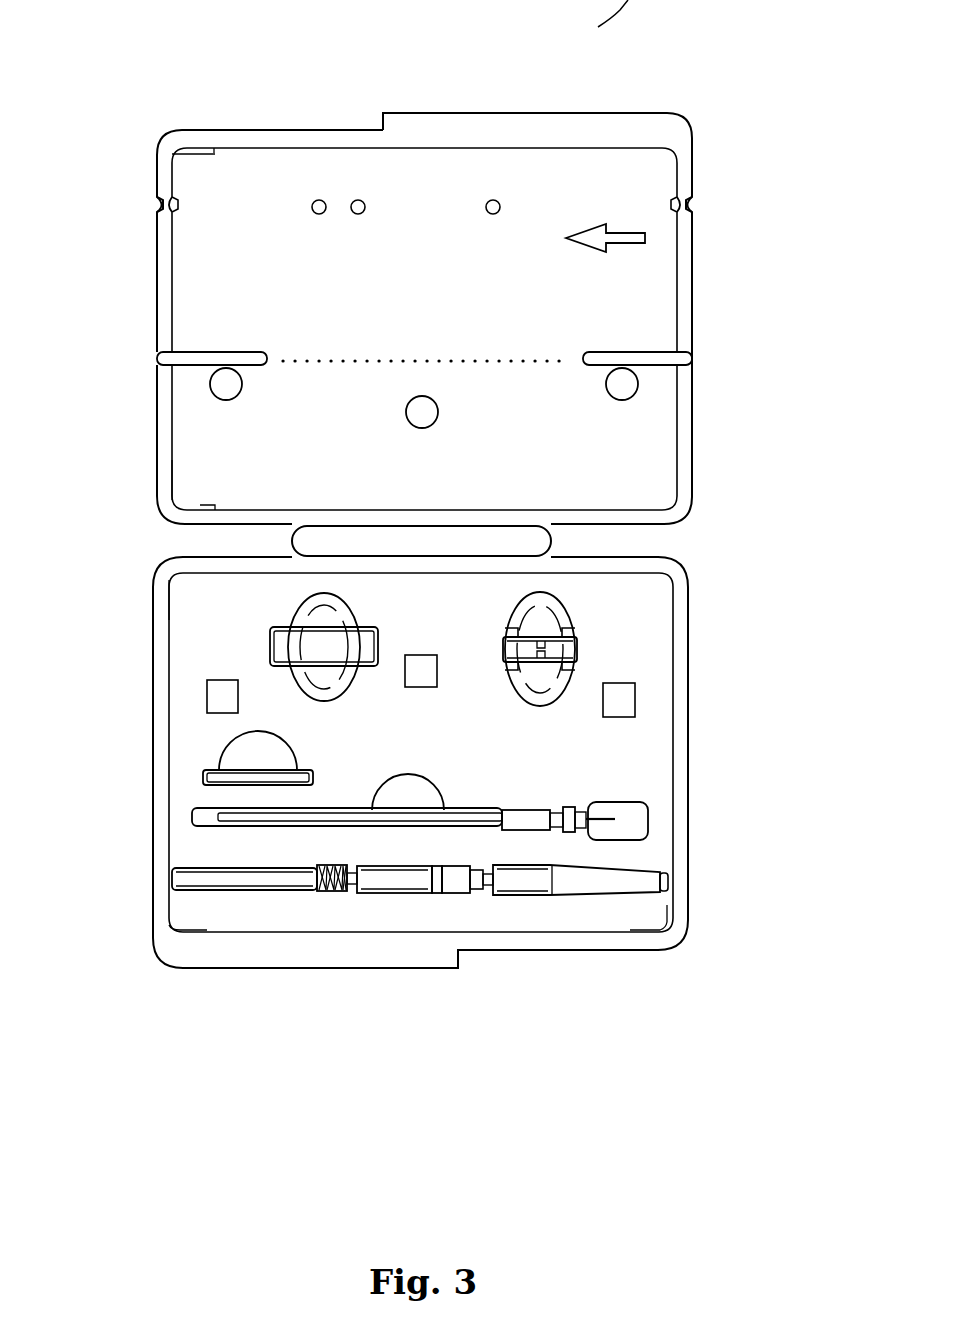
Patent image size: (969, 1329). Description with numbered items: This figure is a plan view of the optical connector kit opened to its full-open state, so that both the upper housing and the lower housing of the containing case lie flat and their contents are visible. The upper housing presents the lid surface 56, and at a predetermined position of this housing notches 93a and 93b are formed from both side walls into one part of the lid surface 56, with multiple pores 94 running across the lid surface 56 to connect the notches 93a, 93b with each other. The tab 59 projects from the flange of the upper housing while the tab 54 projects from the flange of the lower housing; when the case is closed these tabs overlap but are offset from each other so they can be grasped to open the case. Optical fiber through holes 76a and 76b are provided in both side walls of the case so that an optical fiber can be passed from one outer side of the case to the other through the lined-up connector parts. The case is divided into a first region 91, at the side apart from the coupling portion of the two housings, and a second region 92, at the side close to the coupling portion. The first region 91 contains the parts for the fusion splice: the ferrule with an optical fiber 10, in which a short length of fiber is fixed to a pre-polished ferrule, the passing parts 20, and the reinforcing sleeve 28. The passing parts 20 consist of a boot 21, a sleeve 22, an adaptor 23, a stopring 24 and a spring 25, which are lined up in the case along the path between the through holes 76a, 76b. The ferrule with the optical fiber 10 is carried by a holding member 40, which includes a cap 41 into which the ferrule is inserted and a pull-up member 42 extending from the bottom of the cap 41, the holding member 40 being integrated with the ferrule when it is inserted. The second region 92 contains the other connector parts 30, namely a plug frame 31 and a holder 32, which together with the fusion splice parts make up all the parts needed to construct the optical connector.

The ferrule with an optical fiber 10 is at (570, 831).
The passing parts 20 is at (420, 960).
The boot 21 is at (580, 940).
The sleeve 22 is at (460, 893).
The adaptor 23 is at (445, 893).
The stopring 24 is at (407, 890).
The spring 25 is at (330, 892).
The reinforcing sleeve 28 is at (240, 764).
The other connector parts 30 is at (530, 646).
The plug frame 31 is at (560, 650).
The holder 32 is at (323, 637).
The holding member 40 is at (491, 804).
The cap 41 is at (527, 813).
The pull-up member 42 is at (410, 813).
The tab 54 is at (243, 960).
The lid surface 56 is at (276, 172).
The tab 59 is at (500, 120).
The optical fiber through hole 76a is at (690, 203).
The optical fiber through hole 76b is at (160, 200).
The first region 91 is at (86, 147).
The second region 92 is at (86, 365).
The notch 93a is at (172, 358).
The notch 93b is at (690, 357).
The pores 94 is at (280, 353).